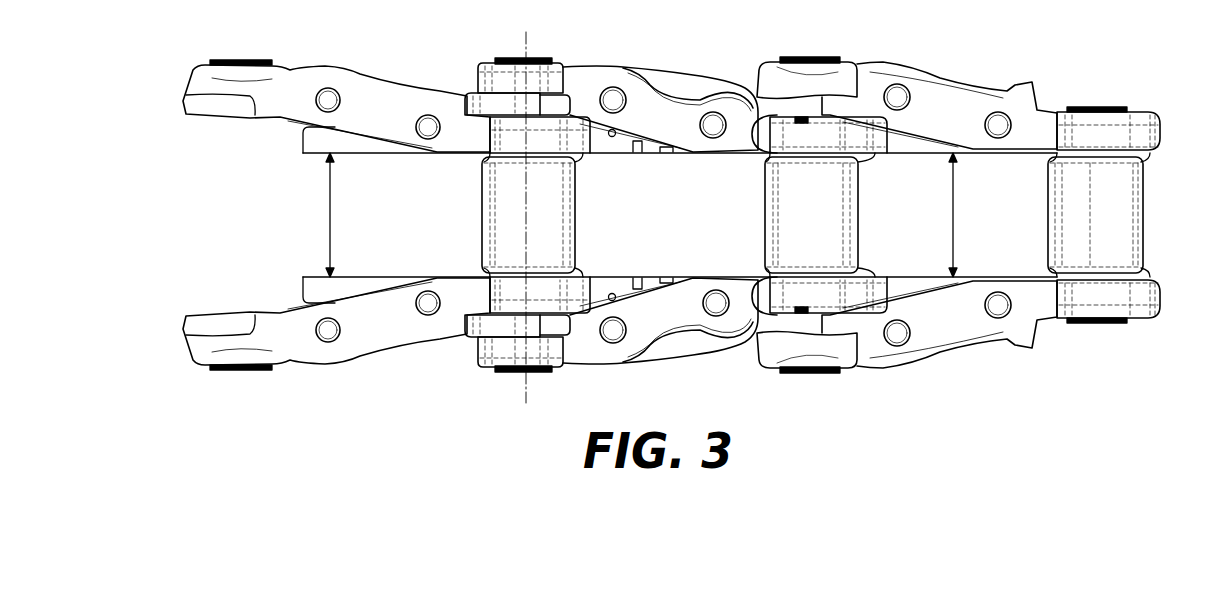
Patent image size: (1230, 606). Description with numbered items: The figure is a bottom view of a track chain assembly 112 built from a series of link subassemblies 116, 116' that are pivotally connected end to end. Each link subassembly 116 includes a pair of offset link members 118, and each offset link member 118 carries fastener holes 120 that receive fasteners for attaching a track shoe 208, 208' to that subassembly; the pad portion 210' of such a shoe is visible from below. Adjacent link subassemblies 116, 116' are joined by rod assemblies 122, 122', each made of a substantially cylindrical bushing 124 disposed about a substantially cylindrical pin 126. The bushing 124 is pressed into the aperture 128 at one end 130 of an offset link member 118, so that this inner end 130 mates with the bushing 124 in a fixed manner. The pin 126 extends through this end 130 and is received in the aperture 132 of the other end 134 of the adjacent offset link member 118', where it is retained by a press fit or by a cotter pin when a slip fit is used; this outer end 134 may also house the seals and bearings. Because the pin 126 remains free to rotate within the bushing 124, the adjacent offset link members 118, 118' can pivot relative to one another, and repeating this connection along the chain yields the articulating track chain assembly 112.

The track chain assembly 112 is at (690, 214).
The link subassembly 116 is at (301, 215).
The second link spacing 116' is at (980, 215).
The offset link member 118 is at (620, 216).
The adjacent offset link member 118' is at (336, 340).
The fastener hole 120 is at (332, 88).
The rod assembly 122 is at (574, 212).
The second pin assembly 122' is at (847, 215).
The bushing 124 is at (557, 221).
The pin 126 is at (510, 373).
The aperture 128 is at (1070, 155).
The one end 130 is at (543, 143).
The aperture 132 is at (770, 62).
The other end 134 is at (822, 68).
The track shoe 208 is at (603, 216).
The track shoe 208' is at (731, 271).
The pad portion 210' is at (841, 338).